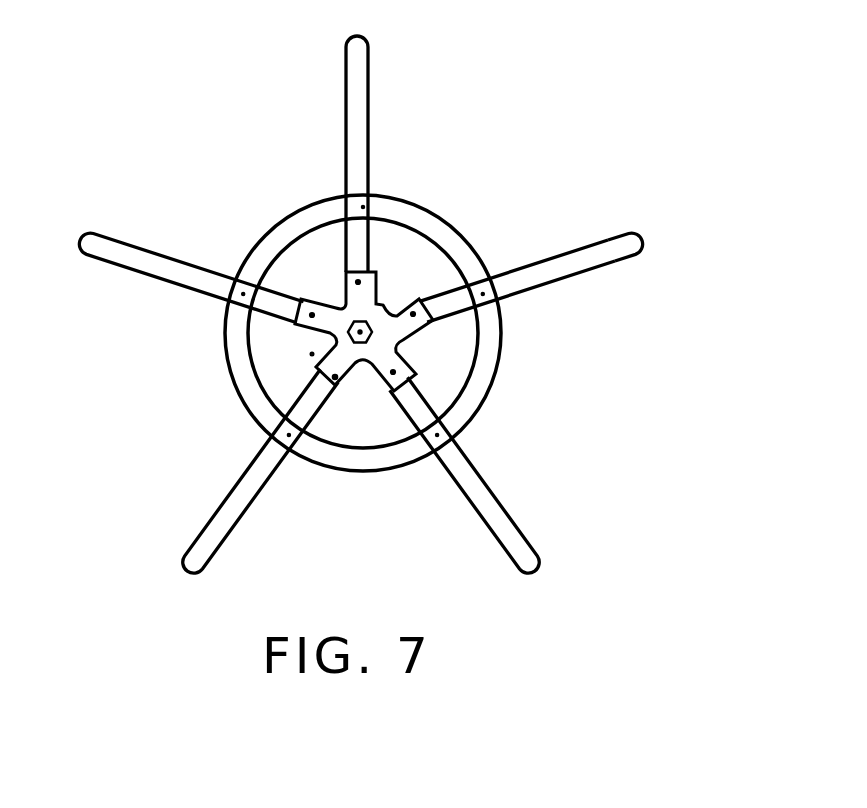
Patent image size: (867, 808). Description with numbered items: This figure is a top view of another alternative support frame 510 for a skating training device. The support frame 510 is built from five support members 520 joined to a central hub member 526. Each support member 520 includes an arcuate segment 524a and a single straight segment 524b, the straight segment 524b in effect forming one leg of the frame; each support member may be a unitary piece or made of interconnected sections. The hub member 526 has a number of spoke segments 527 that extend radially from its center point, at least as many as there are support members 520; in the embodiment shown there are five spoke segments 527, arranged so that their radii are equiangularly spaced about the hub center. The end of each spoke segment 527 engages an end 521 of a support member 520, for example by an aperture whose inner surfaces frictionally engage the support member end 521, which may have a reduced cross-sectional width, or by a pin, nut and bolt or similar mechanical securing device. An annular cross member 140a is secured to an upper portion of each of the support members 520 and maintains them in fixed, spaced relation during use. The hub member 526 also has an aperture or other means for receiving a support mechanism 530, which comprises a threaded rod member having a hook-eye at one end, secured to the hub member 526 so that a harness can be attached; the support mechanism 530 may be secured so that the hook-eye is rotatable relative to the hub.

The support frame 510 is at (576, 129).
The annular cross member 140a is at (278, 248).
The support member 520 is at (570, 277).
The arcuate segment 524a is at (527, 270).
The straight segment 524b is at (638, 238).
The support member end 521 is at (442, 367).
The hub member 526 is at (297, 361).
The spoke segment 527 is at (335, 377).
The support mechanism 530 is at (372, 328).